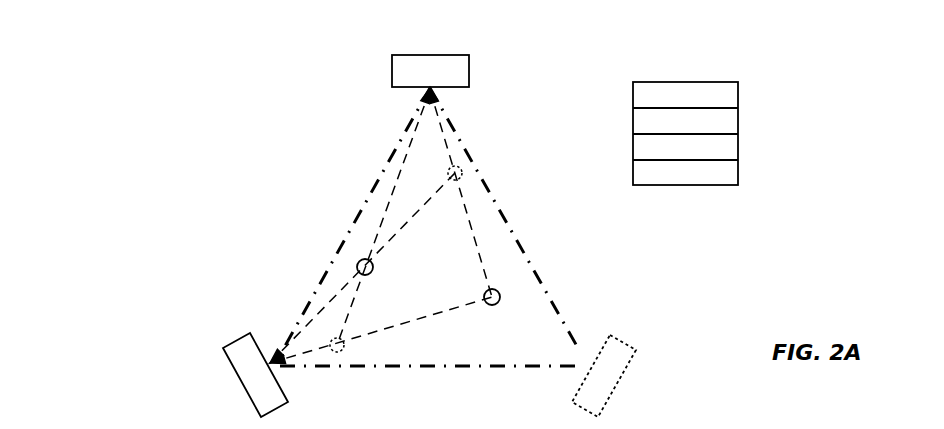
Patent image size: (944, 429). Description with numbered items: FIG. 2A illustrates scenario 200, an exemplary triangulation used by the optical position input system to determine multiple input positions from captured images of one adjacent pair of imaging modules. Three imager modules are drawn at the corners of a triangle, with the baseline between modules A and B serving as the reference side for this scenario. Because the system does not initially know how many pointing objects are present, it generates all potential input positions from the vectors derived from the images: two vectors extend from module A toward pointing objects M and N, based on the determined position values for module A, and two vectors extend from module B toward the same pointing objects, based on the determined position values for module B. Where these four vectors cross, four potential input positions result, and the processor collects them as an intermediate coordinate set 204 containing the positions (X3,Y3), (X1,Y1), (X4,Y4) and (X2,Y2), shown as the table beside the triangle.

The scenario 200 is at (96, 44).
The intermediate coordinate set 204 is at (756, 67).